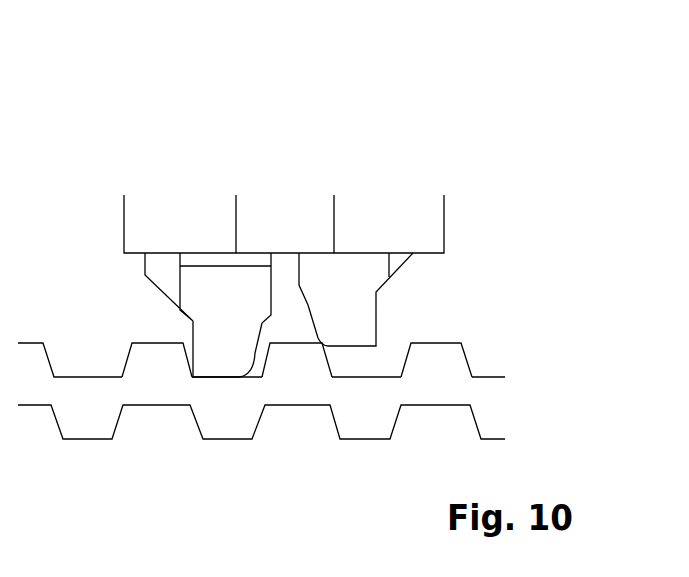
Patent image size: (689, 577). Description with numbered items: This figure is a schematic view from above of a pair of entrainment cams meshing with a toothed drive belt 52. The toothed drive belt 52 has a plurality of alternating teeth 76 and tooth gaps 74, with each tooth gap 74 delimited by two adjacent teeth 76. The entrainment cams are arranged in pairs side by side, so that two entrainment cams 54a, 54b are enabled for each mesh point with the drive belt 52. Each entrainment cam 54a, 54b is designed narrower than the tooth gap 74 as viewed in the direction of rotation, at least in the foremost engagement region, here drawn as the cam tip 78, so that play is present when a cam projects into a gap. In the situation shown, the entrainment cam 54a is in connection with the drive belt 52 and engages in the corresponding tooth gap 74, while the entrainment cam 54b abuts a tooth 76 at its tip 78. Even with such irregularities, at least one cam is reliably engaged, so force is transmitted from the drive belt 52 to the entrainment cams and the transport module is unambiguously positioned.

The toothed drive belt 52 is at (431, 403).
The entrainment cam 54a is at (222, 307).
The entrainment cam 54b is at (333, 325).
The tooth gap 74 is at (386, 353).
The tooth 76 is at (160, 363).
The tooth tip 78 is at (250, 353).